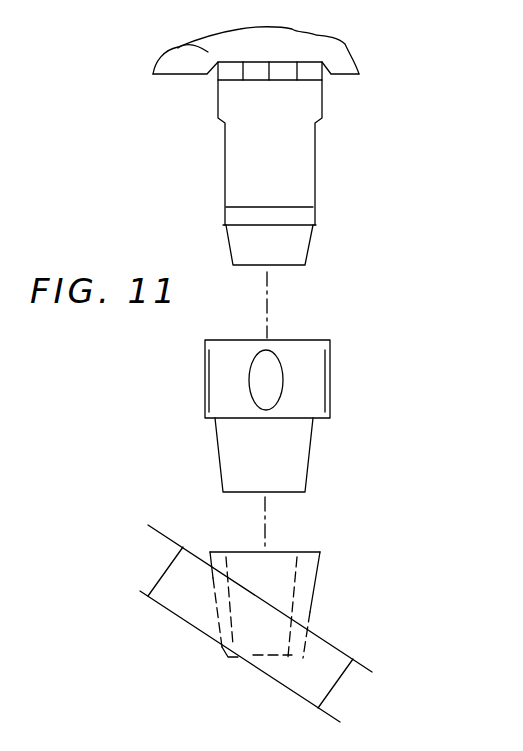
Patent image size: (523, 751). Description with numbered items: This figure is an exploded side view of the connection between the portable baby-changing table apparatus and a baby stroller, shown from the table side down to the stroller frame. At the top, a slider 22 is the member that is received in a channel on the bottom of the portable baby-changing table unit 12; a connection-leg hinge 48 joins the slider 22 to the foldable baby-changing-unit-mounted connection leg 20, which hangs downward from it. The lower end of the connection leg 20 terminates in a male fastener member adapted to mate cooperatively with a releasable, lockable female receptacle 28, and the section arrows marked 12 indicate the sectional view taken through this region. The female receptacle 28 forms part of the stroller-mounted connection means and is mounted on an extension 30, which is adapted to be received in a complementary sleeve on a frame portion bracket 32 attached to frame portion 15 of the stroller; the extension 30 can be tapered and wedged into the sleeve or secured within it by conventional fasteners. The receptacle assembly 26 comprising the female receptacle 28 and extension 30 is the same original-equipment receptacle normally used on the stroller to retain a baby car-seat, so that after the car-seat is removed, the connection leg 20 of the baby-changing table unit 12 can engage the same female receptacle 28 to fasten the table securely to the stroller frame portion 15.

The portable baby-changing table unit 12 is at (368, 42).
The frame portion 15 is at (148, 568).
The baby-changing-unit-mounted connection leg 20 is at (290, 247).
The slider 22 is at (178, 48).
The intermediate assembly 26 is at (254, 415).
The female receptacle 28 is at (308, 377).
The extension 30 is at (280, 452).
The frame portion bracket 32 is at (280, 575).
The connection-leg hinge 48 is at (219, 77).